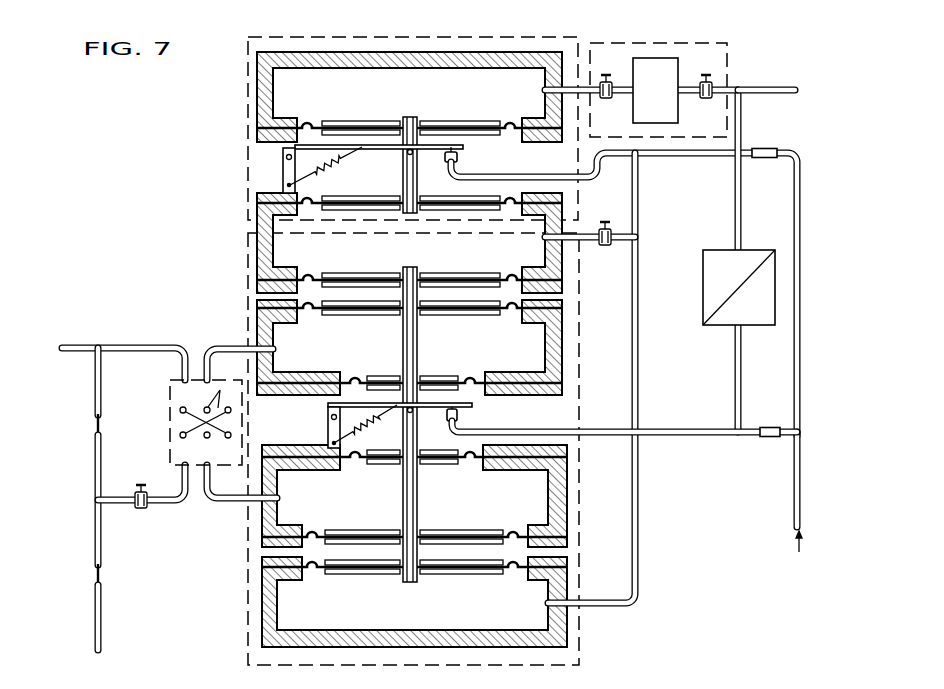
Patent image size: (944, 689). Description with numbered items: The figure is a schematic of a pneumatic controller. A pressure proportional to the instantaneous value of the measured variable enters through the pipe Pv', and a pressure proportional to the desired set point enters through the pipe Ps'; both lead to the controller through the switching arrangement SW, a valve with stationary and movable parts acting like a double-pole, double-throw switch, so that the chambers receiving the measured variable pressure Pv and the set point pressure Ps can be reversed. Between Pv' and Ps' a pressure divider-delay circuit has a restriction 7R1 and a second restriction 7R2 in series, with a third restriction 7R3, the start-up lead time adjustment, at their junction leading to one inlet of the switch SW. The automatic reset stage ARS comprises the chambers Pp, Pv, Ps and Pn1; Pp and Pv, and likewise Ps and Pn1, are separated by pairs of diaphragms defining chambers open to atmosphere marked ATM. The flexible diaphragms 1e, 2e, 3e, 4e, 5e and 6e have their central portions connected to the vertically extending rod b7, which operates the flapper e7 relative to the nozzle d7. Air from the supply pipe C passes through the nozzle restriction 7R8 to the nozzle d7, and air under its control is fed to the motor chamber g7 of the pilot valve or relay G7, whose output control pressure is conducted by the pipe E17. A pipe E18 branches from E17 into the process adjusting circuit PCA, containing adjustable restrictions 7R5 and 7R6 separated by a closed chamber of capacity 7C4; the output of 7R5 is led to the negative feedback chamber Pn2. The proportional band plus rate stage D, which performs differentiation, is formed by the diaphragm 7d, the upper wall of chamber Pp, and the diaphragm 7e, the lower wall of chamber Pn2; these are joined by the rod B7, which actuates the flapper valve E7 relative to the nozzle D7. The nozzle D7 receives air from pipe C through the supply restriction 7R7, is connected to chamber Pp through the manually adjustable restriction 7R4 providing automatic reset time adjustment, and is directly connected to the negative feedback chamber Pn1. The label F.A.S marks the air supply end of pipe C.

The diaphragm 7e is at (307, 127).
The negative feedback chamber Pn2 is at (409, 97).
The valve-actuating shaft or rod B7 is at (405, 180).
The flapper valve E7 is at (435, 151).
The nozzle D7 is at (457, 158).
The diaphragm 7d is at (317, 214).
The flexible diaphragm 1e is at (317, 278).
The chamber Pp is at (409, 243).
The flexible diaphragm 2e is at (317, 311).
The measured variable pressure chamber Pv is at (409, 347).
The flexible diaphragm 3e is at (353, 383).
The nozzle d7 is at (460, 415).
The flapper e7 is at (400, 425).
The flexible diaphragm 4e is at (355, 460).
The set point pressure chamber Ps is at (414, 496).
The flexible diaphragm 5e is at (317, 534).
The rod or shaft b7 is at (412, 508).
The flexible diaphragm 6e is at (315, 570).
The negative feedback chamber Pn1 is at (414, 602).
The chamber open to atmosphere ATM is at (360, 422).
The process characteristic adjusting circuit PCA is at (610, 43).
The closed chamber capacity 7C4 is at (653, 68).
The adjustable needle valve or restriction 7R5 is at (606, 99).
The adjustable needle valve or restriction 7R6 is at (706, 99).
The pipe E18 is at (720, 87).
The pipe E17 is at (777, 87).
The supply restriction 7R7 is at (763, 152).
The pilot valve or relay G7 is at (695, 247).
The motor chamber g7 is at (762, 318).
The manually adjustable restriction 7R4 is at (605, 246).
The nozzle restriction 7R8 is at (773, 437).
The supply pipe C is at (795, 502).
The fresh air supply F.A.S is at (798, 551).
The restriction 7R1 is at (96, 420).
The second restriction 7R2 is at (96, 573).
The third restriction 7R3 is at (140, 509).
The switching arrangement SW is at (170, 423).
The process variable connection pipe Pv' is at (107, 359).
The set point connection pipe Ps' is at (105, 631).
The proportional band plus rate stage D is at (246, 80).
The automatic reset stage ARS is at (252, 614).